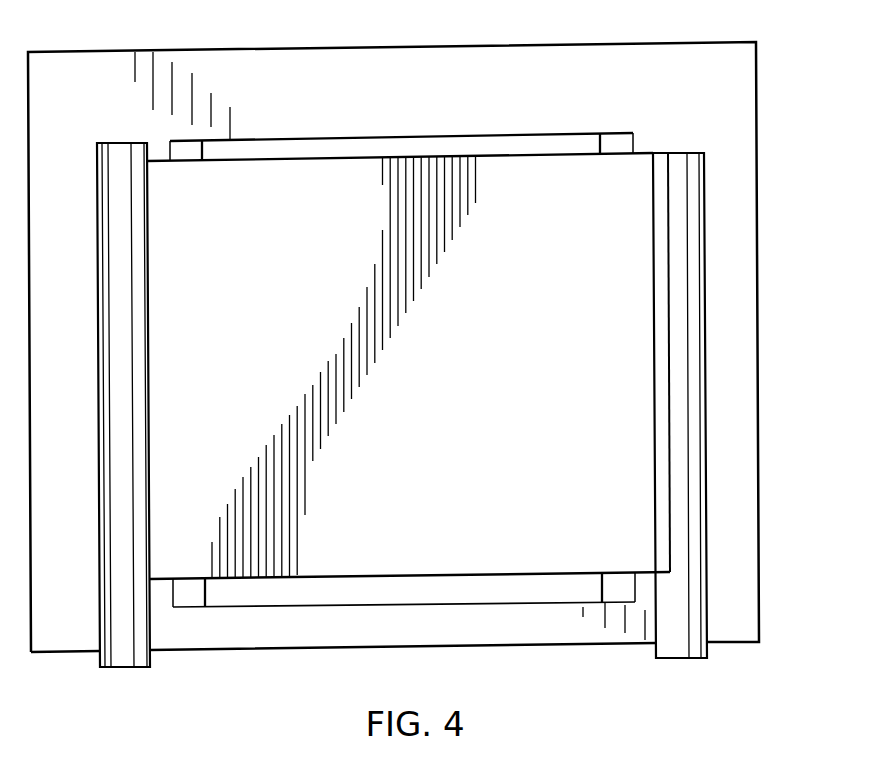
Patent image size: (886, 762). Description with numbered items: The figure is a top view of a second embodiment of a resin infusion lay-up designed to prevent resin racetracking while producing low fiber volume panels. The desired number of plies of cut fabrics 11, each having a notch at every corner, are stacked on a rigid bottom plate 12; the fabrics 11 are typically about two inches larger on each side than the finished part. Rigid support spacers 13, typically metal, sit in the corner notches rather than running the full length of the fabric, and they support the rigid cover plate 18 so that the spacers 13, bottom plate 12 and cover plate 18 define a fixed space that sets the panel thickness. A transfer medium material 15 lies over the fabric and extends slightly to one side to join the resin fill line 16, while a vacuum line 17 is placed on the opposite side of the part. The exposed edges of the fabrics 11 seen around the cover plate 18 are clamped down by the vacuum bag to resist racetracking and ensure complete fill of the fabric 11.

The cut fabrics 11 is at (385, 137).
The rigid bottom plate 12 is at (717, 137).
The rigid support spacers 13 is at (188, 141).
The transfer medium material 15 is at (662, 497).
The resin fill line 16 is at (680, 660).
The vacuum line 17 is at (122, 668).
The rigid cover plate 18 is at (595, 425).